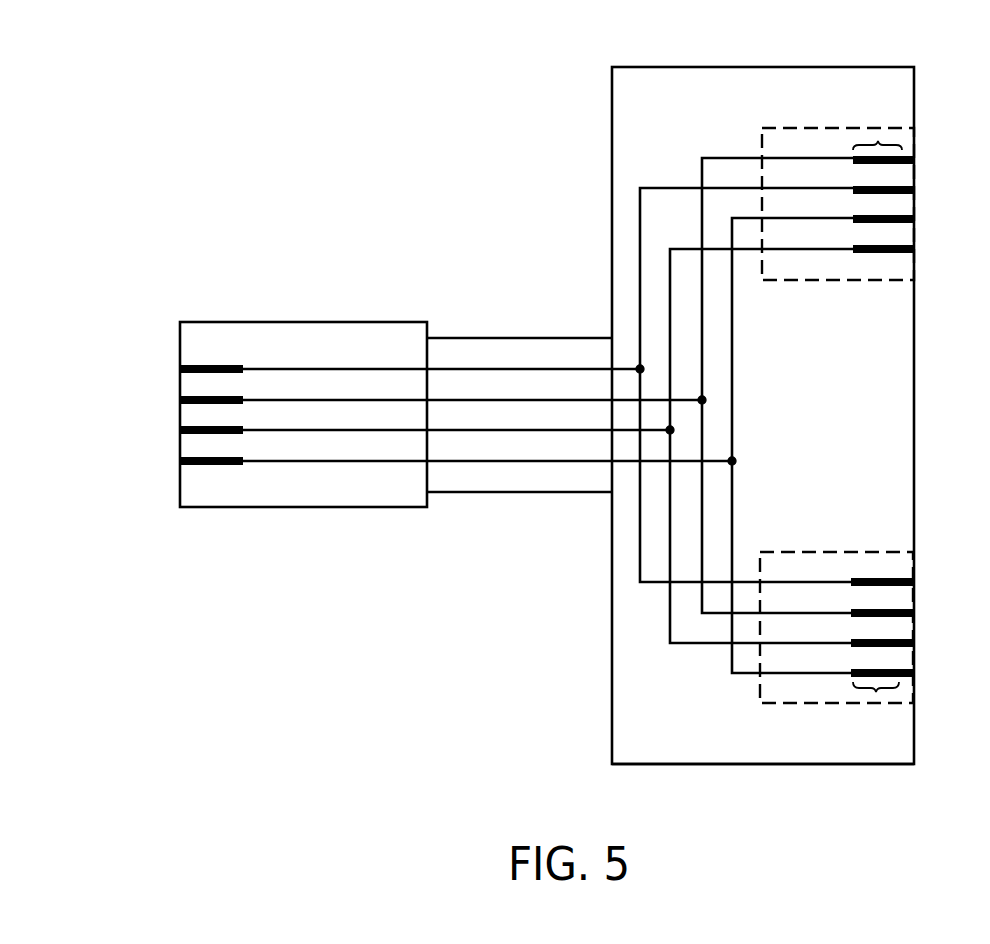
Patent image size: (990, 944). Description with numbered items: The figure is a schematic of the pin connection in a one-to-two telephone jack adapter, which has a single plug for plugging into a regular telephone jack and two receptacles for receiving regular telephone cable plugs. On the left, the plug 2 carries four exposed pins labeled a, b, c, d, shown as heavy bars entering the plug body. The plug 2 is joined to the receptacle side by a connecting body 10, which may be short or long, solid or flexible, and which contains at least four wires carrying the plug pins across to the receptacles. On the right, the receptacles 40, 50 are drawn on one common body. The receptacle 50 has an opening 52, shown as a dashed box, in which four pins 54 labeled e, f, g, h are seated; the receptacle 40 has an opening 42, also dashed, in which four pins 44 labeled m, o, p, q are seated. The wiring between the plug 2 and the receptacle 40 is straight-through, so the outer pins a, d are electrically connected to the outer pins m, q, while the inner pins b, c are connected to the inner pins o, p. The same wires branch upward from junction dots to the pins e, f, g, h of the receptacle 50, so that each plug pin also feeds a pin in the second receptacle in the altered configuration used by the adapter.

The plug 2 is at (304, 337).
The connecting body 10 is at (522, 479).
The receptacle 40 is at (815, 757).
The receptacle 50 is at (818, 78).
The opening 52 is at (860, 230).
The pins 54 is at (878, 135).
The opening 42 is at (861, 606).
The pins 44 is at (877, 692).
The pin a is at (175, 370).
The pin b is at (175, 401).
The pin c is at (175, 432).
The pin d is at (175, 463).
The pin e is at (918, 162).
The pin f is at (918, 192).
The pin g is at (918, 221).
The pin h is at (918, 251).
The pin m is at (917, 584).
The pin o is at (917, 615).
The pin p is at (917, 645).
The pin q is at (917, 675).